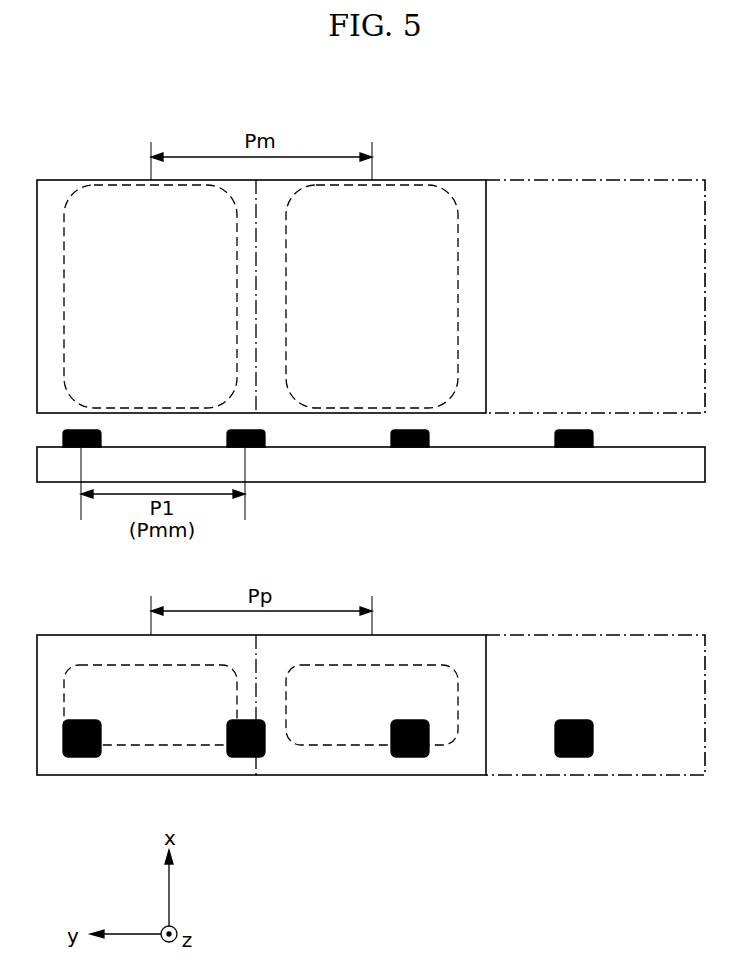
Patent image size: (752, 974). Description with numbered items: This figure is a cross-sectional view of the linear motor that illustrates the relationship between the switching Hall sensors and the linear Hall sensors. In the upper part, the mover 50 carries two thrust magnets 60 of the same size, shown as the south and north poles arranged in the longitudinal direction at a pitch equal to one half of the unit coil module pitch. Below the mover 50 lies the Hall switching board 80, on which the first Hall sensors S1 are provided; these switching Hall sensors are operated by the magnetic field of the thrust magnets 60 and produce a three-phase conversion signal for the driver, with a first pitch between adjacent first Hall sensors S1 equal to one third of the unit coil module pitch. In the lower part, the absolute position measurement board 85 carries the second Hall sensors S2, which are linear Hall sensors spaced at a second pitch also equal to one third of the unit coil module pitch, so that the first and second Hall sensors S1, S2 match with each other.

The mover 50 is at (60, 180).
The thrust magnets 60 is at (104, 196).
The Hall switching board 80 is at (343, 470).
The absolute position measurement board 85 is at (422, 776).
The first Hall sensors S1 is at (62, 438).
The second Hall sensors S2 is at (573, 758).